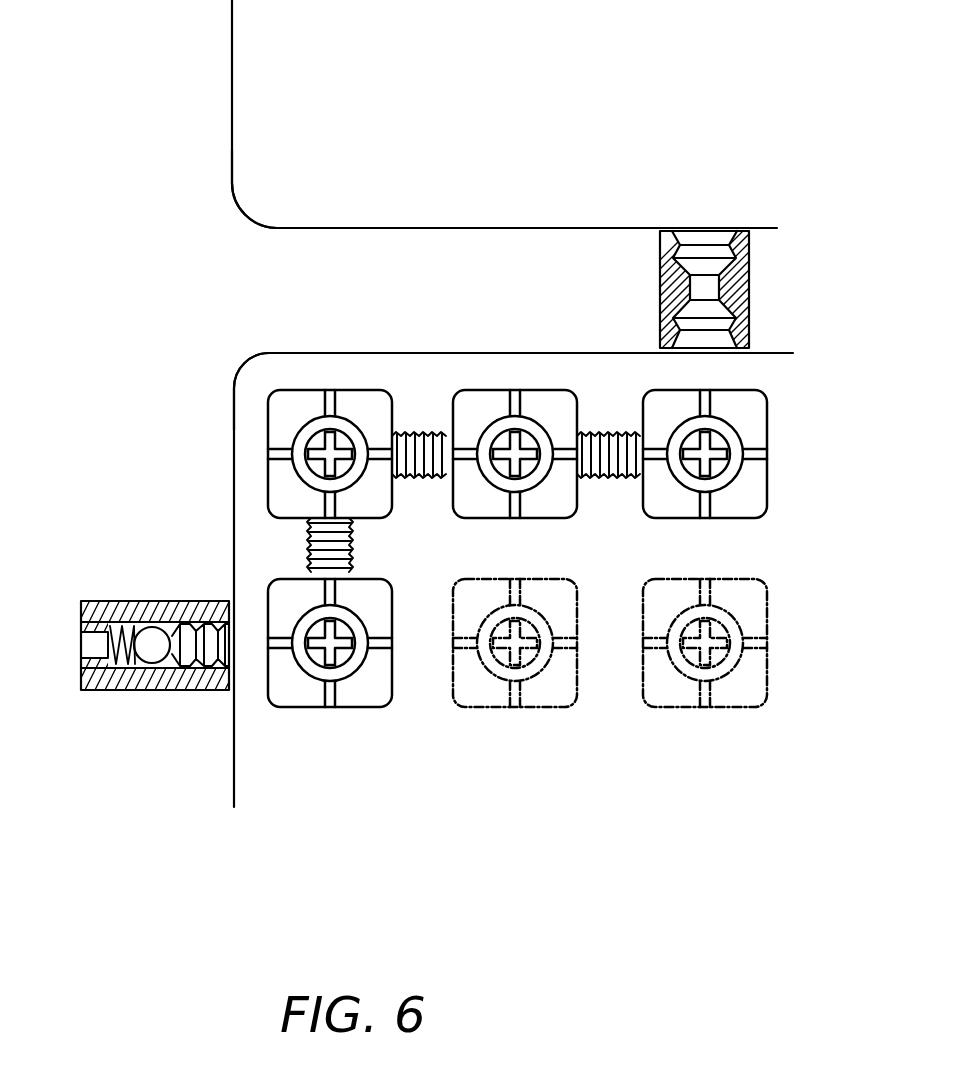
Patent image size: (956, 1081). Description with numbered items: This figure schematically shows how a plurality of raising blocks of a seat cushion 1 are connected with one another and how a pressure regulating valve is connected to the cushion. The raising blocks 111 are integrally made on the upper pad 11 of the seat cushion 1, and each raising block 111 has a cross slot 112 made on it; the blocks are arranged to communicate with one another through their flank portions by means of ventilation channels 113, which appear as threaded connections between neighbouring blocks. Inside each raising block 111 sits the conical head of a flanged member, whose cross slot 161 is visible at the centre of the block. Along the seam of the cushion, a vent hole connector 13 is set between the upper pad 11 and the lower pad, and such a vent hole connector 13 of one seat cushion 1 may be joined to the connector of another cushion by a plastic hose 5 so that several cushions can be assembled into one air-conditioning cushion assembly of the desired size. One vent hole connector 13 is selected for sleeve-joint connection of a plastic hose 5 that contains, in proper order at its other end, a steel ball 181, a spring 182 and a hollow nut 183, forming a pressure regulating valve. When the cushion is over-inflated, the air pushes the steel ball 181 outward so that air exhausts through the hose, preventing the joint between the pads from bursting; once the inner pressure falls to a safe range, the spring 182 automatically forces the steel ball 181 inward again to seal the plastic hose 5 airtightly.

The seat cushion 1 is at (225, 116).
The upper pad 11 is at (243, 42).
The plastic hose 5 is at (735, 288).
The vent hole connector 13 is at (690, 245).
The raising block 111 is at (292, 407).
The cross slot 112 is at (330, 403).
The ventilation channel 113 is at (430, 432).
The cross slot of flanged member 161 is at (330, 452).
The steel ball 181 is at (150, 653).
The spring 182 is at (110, 680).
The hollow nut 183 is at (82, 602).